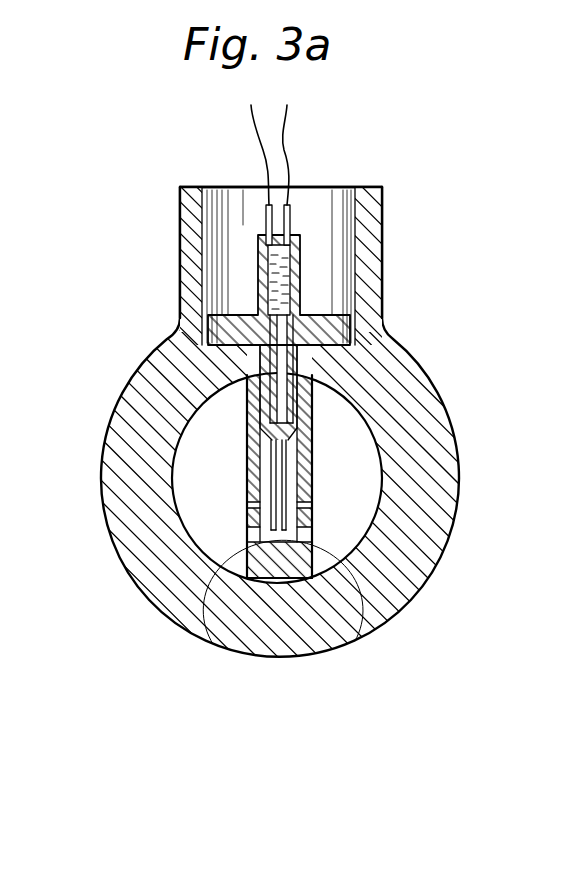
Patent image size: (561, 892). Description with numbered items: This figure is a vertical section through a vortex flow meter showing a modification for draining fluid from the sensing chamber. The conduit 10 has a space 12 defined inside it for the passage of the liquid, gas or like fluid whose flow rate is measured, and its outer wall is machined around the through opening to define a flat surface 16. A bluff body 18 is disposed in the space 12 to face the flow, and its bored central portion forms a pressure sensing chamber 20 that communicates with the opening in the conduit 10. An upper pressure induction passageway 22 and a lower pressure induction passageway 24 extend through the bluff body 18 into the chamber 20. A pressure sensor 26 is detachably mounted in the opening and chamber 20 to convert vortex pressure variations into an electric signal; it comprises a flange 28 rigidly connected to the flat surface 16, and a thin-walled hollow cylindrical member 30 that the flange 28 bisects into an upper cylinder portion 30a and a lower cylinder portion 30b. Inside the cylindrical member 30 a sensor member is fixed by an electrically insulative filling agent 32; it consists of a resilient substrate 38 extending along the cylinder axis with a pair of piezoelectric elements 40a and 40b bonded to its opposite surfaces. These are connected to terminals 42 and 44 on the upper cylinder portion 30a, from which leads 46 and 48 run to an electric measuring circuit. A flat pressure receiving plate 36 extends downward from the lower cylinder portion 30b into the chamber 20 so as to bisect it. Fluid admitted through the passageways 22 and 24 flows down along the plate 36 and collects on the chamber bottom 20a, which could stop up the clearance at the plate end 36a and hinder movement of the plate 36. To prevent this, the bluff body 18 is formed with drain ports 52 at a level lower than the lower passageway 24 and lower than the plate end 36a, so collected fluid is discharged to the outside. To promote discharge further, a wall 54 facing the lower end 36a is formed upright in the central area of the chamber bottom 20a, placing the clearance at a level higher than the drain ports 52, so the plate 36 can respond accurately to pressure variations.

The conduit 10 is at (160, 566).
The space 12 is at (343, 528).
The flat surface 16 is at (235, 342).
The bluff body 18 is at (227, 477).
The pressure sensing chamber 20 is at (312, 452).
The chamber bottom 20a is at (365, 615).
The upper pressure induction passageway 22 is at (253, 390).
The lower pressure induction passageway 24 is at (243, 507).
The pressure sensor 26 is at (325, 310).
The flange 28 is at (237, 318).
The hollow cylindrical member 30 is at (305, 258).
The upper cylinder portion 30a is at (257, 248).
The lower cylinder portion 30b is at (300, 390).
The filling agent 32 is at (285, 280).
The pressure receiving plate 36 is at (288, 462).
The lower end of the pressure receiving plate 36a is at (250, 505).
The resilient substrate 38 is at (345, 358).
The piezoelectric element 40a is at (270, 418).
The piezoelectric element 40b is at (300, 372).
The terminal 42 is at (353, 212).
The terminal 44 is at (268, 213).
The lead 46 is at (289, 124).
The lead 48 is at (254, 124).
The drain ports 52 is at (187, 622).
The wall 54 is at (245, 643).